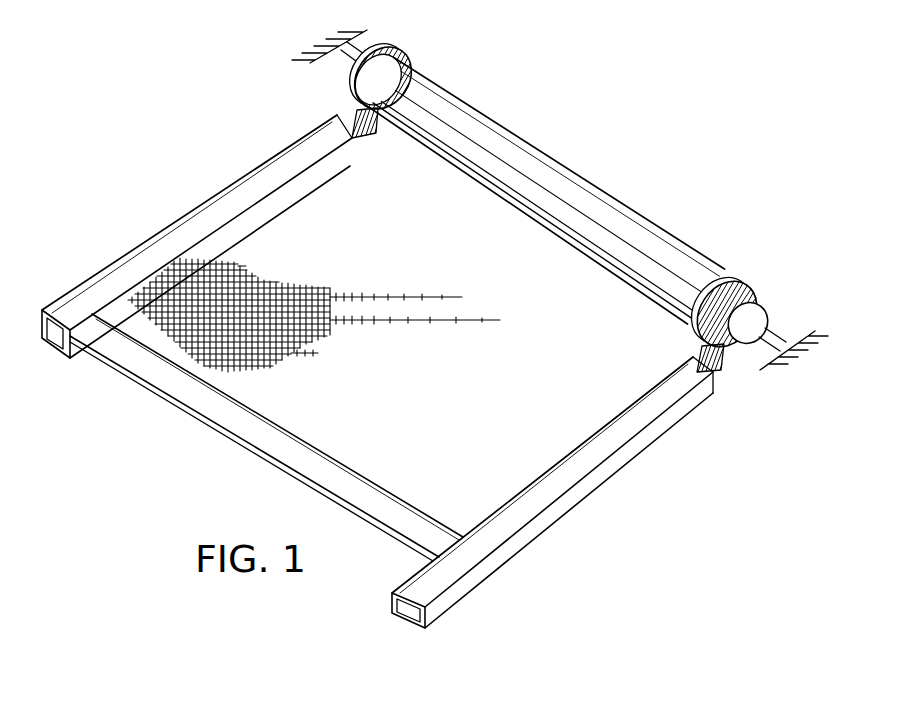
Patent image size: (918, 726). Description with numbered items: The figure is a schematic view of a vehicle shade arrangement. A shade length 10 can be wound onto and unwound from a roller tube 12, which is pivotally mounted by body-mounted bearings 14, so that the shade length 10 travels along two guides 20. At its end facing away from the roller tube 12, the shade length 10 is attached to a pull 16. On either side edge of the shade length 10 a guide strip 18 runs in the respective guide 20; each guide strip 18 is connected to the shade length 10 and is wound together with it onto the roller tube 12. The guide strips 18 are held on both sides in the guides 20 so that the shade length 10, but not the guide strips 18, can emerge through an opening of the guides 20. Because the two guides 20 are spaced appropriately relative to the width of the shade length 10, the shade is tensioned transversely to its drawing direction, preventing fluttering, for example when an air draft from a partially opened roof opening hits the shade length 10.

The shade length 10 is at (445, 372).
The roller tube 12 is at (744, 297).
The body-mounted bearings 14 is at (788, 356).
The pull 16 is at (240, 412).
The guide strip 18 is at (390, 51).
The guides 20 is at (183, 231).